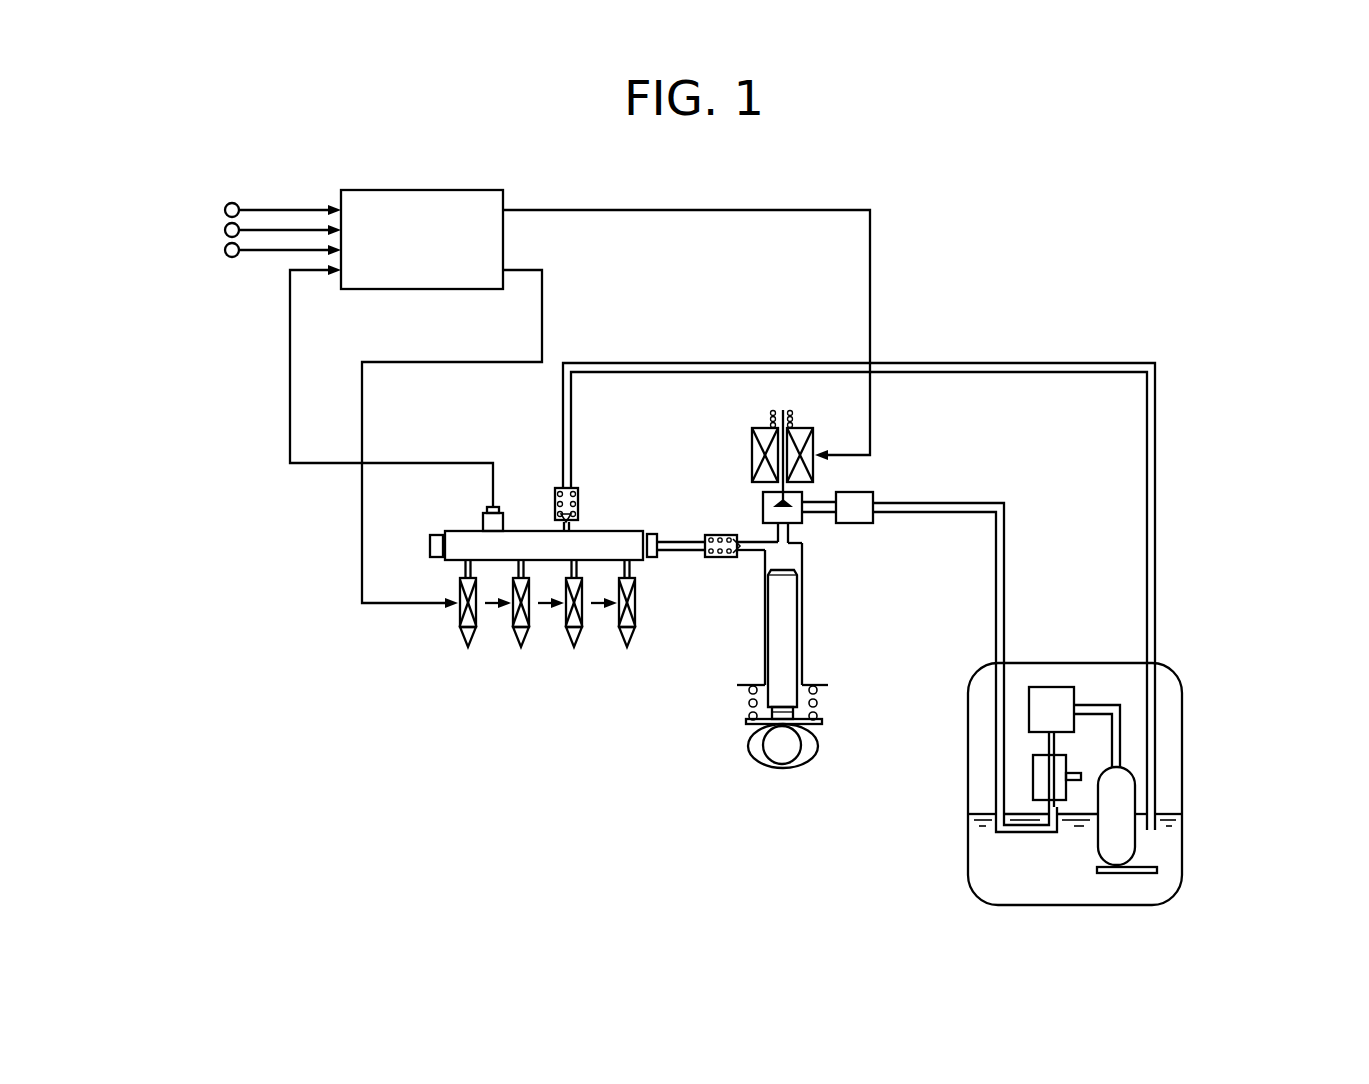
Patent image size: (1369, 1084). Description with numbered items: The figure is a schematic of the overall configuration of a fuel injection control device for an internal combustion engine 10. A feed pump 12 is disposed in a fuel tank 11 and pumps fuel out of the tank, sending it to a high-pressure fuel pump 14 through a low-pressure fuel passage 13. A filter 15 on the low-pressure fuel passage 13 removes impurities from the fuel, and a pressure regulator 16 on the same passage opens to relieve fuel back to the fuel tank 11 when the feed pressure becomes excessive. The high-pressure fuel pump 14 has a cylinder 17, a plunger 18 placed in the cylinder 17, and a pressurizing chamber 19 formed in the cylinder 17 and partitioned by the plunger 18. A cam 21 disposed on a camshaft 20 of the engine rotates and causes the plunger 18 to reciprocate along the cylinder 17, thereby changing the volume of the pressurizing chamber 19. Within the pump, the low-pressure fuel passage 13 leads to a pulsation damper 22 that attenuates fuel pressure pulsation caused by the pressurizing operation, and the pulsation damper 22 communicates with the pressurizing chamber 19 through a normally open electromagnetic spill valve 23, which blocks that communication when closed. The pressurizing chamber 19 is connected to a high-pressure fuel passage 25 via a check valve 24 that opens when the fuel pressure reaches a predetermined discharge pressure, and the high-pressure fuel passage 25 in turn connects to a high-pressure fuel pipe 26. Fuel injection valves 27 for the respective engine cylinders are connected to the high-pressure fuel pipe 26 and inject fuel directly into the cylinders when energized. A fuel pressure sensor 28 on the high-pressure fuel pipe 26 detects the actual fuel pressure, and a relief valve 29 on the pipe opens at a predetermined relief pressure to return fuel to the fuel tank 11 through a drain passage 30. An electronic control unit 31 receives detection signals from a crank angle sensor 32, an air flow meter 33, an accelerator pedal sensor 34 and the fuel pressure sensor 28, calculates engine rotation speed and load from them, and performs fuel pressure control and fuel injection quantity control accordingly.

The internal combustion engine 10 is at (1073, 207).
The fuel tank 11 is at (967, 847).
The feed pump 12 is at (1138, 848).
The low-pressure fuel passage 13 is at (1005, 546).
The high-pressure fuel pump 14 is at (722, 705).
The filter 15 is at (1052, 686).
The pressure regulator 16 is at (1032, 777).
The cylinder 17 is at (763, 638).
The plunger 18 is at (798, 617).
The pressurizing chamber 19 is at (803, 552).
The camshaft 20 is at (749, 745).
The cam 21 is at (797, 745).
The pulsation damper 22 is at (866, 525).
The electromagnetic spill valve 23 is at (750, 453).
The check valve 24 is at (722, 559).
The high-pressure fuel passage 25 is at (682, 540).
The high-pressure fuel pipe 26 is at (623, 530).
The fuel injection valves 27 is at (519, 648).
The fuel pressure sensor 28 is at (482, 520).
The relief valve 29 is at (554, 492).
The drain passage 30 is at (999, 374).
The electronic control unit 31 is at (424, 290).
The crank angle sensor 32 is at (225, 209).
The air flow meter 33 is at (225, 230).
The accelerator pedal sensor 34 is at (225, 251).